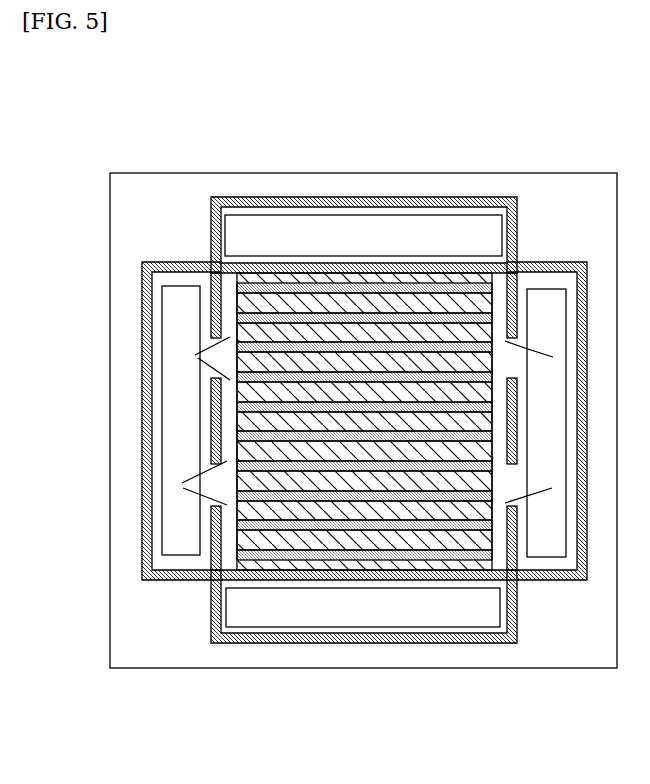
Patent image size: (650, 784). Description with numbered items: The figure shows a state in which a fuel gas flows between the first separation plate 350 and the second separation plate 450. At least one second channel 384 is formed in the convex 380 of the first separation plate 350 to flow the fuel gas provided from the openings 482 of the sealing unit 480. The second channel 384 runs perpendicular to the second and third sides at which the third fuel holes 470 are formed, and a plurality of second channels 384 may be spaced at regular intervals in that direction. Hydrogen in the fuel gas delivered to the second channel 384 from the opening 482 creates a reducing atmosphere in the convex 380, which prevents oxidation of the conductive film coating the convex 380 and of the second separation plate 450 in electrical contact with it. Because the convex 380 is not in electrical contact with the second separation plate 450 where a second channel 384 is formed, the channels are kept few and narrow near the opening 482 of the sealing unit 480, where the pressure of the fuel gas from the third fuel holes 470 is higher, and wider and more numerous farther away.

The first separation plate 350 is at (364, 408).
The convex 380 is at (262, 540).
The second channel 384 is at (363, 558).
The second separation plate 450 is at (176, 188).
The third fuel holes 470 is at (172, 436).
The sealing unit 480 is at (552, 262).
The openings 482 is at (200, 356).